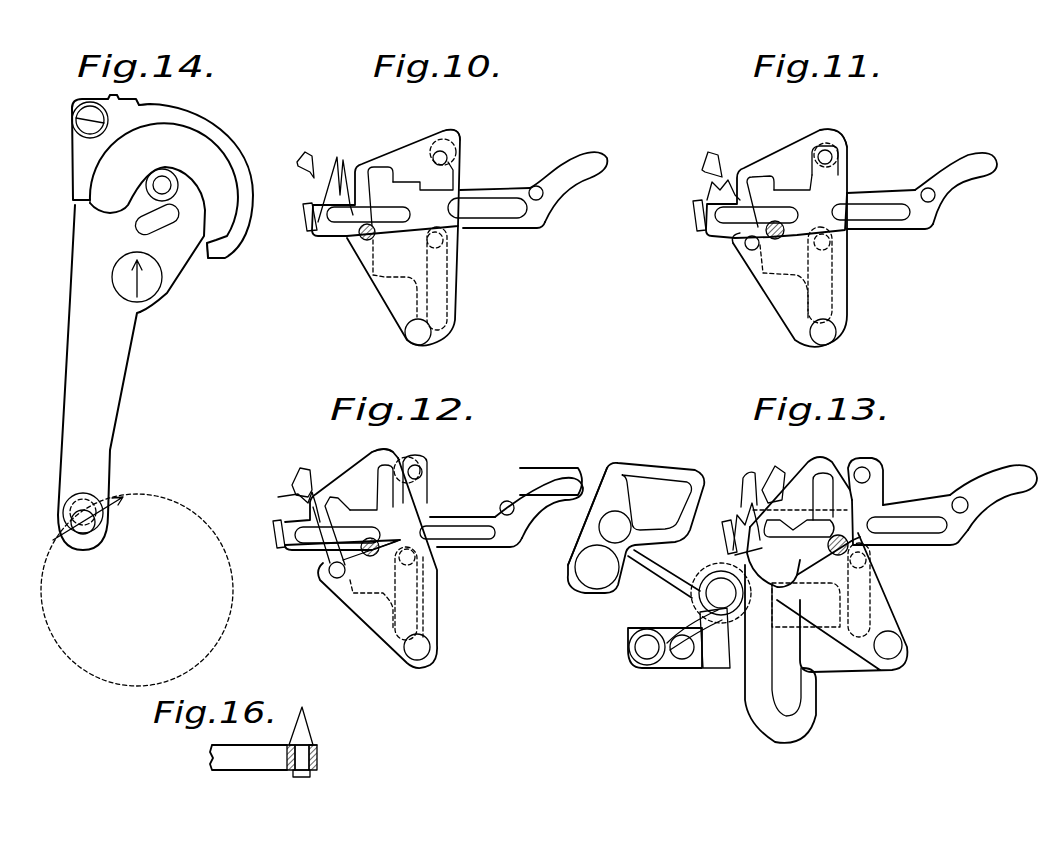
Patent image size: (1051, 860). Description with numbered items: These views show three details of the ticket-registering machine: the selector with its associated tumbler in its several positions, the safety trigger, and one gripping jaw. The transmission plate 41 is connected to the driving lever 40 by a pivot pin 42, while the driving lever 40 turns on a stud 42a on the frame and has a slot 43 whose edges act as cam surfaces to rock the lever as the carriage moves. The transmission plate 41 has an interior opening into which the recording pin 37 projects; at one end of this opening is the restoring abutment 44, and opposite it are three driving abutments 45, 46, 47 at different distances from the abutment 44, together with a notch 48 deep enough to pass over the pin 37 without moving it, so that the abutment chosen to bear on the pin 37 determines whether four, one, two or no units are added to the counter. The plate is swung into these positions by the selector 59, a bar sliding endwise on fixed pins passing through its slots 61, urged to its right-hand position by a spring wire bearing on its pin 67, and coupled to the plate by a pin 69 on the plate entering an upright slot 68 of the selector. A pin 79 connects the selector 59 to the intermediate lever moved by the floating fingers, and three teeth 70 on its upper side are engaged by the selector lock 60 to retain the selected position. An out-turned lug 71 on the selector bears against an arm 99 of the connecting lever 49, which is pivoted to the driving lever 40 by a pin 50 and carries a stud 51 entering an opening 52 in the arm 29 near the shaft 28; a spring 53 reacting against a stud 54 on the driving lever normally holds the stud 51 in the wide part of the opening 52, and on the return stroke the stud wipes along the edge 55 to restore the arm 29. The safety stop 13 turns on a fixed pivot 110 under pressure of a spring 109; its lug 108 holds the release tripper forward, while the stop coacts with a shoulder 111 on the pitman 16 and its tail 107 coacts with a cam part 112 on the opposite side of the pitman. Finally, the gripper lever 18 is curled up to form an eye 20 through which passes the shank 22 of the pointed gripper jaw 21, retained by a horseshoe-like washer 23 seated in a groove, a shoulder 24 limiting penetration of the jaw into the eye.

In FIG. 14, the safety stop 13 is at (82, 162).
In FIG. 14, the pitman 16 is at (137, 445).
In FIG. 14, the tail 107 is at (207, 257).
In FIG. 14, the lug 108 is at (140, 100).
In FIG. 14, the spring 109 is at (111, 96).
In FIG. 14, the fixed pivot 110 is at (72, 120).
In FIG. 14, the shoulder 111 is at (83, 203).
In FIG. 14, the cam part 112 is at (190, 213).
In FIG. 10, the recording pin 37 is at (362, 240).
In FIG. 11, the recording pin 37 is at (777, 239).
In FIG. 12, the recording pin 37 is at (378, 555).
In FIG. 13, the recording pin 37 is at (829, 547).
In FIG. 10, the transmission plate 41 is at (385, 292).
In FIG. 11, the transmission plate 41 is at (738, 247).
In FIG. 12, the transmission plate 41 is at (357, 625).
In FIG. 13, the transmission plate 41 is at (815, 612).
In FIG. 10, the pivot pin 42 is at (430, 340).
In FIG. 11, the pivot pin 42 is at (838, 335).
In FIG. 12, the pivot pin 42 is at (433, 650).
In FIG. 13, the pivot pin 42 is at (890, 660).
In FIG. 10, the restoring abutment 44 is at (400, 232).
In FIG. 11, the restoring abutment 44 is at (800, 240).
In FIG. 12, the restoring abutment 44 is at (360, 572).
In FIG. 13, the restoring abutment 44 is at (812, 568).
In FIG. 10, the driving abutment 45 is at (338, 214).
In FIG. 11, the driving abutment 45 is at (715, 235).
In FIG. 12, the driving abutment 45 is at (320, 555).
In FIG. 13, the driving abutment 45 is at (745, 556).
In FIG. 10, the driving abutment 46 is at (378, 167).
In FIG. 11, the driving abutment 46 is at (757, 176).
In FIG. 12, the driving abutment 46 is at (327, 497).
In FIG. 13, the driving abutment 46 is at (747, 485).
In FIG. 10, the driving abutment 47 is at (407, 181).
In FIG. 11, the driving abutment 47 is at (783, 188).
In FIG. 12, the driving abutment 47 is at (360, 507).
In FIG. 13, the driving abutment 47 is at (805, 520).
In FIG. 10, the notch 48 is at (447, 156).
In FIG. 11, the notch 48 is at (820, 150).
In FIG. 12, the notch 48 is at (408, 462).
In FIG. 13, the notch 48 is at (823, 478).
In FIG. 10, the selector 59 is at (483, 189).
In FIG. 11, the selector 59 is at (870, 192).
In FIG. 12, the selector 59 is at (455, 510).
In FIG. 13, the selector 59 is at (905, 512).
In FIG. 10, the selector lock 60 is at (300, 158).
In FIG. 11, the selector lock 60 is at (706, 160).
In FIG. 12, the selector lock 60 is at (295, 470).
In FIG. 13, the selector lock 60 is at (772, 468).
In FIG. 10, the slots 61 is at (350, 221).
In FIG. 11, the slots 61 is at (890, 216).
In FIG. 12, the slots 61 is at (463, 533).
In FIG. 13, the slots 61 is at (925, 530).
In FIG. 10, the pin 67 is at (545, 199).
In FIG. 11, the pin 67 is at (935, 202).
In FIG. 12, the pin 67 is at (510, 500).
In FIG. 13, the pin 67 is at (960, 496).
In FIG. 10, the upright slot 68 is at (452, 283).
In FIG. 11, the upright slot 68 is at (820, 275).
In FIG. 12, the upright slot 68 is at (437, 623).
In FIG. 13, the upright slot 68 is at (880, 605).
In FIG. 10, the pin 69 is at (455, 250).
In FIG. 11, the pin 69 is at (846, 247).
In FIG. 12, the pin 69 is at (430, 575).
In FIG. 13, the pin 69 is at (878, 577).
In FIG. 10, the teeth 70 is at (343, 160).
In FIG. 11, the teeth 70 is at (708, 190).
In FIG. 12, the teeth 70 is at (285, 500).
In FIG. 13, the teeth 70 is at (740, 515).
In FIG. 10, the out-turned lug 71 is at (305, 216).
In FIG. 11, the out-turned lug 71 is at (694, 214).
In FIG. 12, the out-turned lug 71 is at (274, 533).
In FIG. 13, the out-turned lug 71 is at (722, 535).
In FIG. 10, the pin 79 is at (447, 154).
In FIG. 11, the pin 79 is at (840, 168).
In FIG. 12, the pin 79 is at (425, 464).
In FIG. 13, the pin 79 is at (868, 472).
In FIG. 13, the shaft 28 is at (595, 572).
In FIG. 13, the arm 29 is at (604, 485).
In FIG. 13, the driving lever 40 is at (690, 660).
In FIG. 13, the stud 42a is at (640, 652).
In FIG. 13, the slot 43 is at (760, 680).
In FIG. 13, the connecting lever 49 is at (650, 573).
In FIG. 13, the pin 50 is at (704, 595).
In FIG. 13, the stud 51 is at (598, 527).
In FIG. 13, the opening 52 is at (650, 485).
In FIG. 13, the spring 53 is at (704, 672).
In FIG. 13, the stud 54 is at (680, 655).
In FIG. 13, the edge 55 is at (660, 488).
In FIG. 13, the arm 99 is at (712, 555).
In FIG. 16, the lever 18 is at (240, 771).
In FIG. 16, the eye 20 is at (318, 766).
In FIG. 16, the gripper jaw 21 is at (306, 718).
In FIG. 16, the shank 22 is at (315, 752).
In FIG. 16, the washer 23 is at (310, 773).
In FIG. 16, the shoulder 24 is at (313, 740).